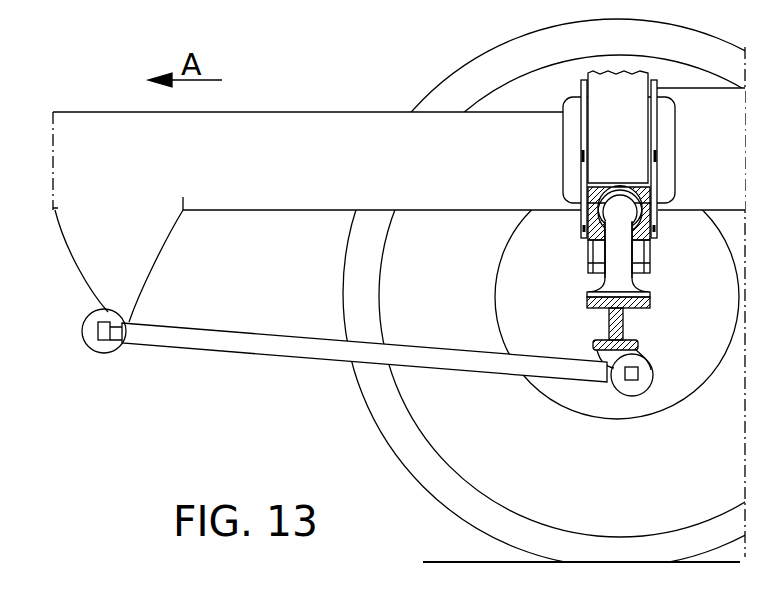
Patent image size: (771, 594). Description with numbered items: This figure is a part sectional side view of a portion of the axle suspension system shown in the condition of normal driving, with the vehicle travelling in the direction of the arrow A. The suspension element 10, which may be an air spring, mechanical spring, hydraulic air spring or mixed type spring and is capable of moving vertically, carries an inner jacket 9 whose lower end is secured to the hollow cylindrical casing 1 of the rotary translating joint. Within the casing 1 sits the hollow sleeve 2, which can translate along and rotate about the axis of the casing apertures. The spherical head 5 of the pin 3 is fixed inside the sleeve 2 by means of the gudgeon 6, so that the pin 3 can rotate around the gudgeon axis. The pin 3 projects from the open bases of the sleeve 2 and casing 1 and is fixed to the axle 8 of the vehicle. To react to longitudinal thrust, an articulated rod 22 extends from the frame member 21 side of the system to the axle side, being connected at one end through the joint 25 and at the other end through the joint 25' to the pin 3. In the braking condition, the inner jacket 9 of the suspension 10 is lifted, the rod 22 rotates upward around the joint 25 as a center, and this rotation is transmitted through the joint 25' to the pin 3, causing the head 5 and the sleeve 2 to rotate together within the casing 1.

The hollow cylindrical casing 1 is at (592, 197).
The hollow sleeve 2 is at (634, 199).
The pin 3 is at (620, 277).
The spherical head 5 is at (625, 215).
The gudgeon 6 is at (598, 207).
The axle 8 is at (636, 305).
The inner jacket 9 is at (587, 250).
The suspension element 10 is at (605, 117).
The frame beam 21 is at (277, 138).
The articulated rod 22 is at (323, 348).
The joint 25 is at (102, 359).
The joint 25' is at (639, 418).